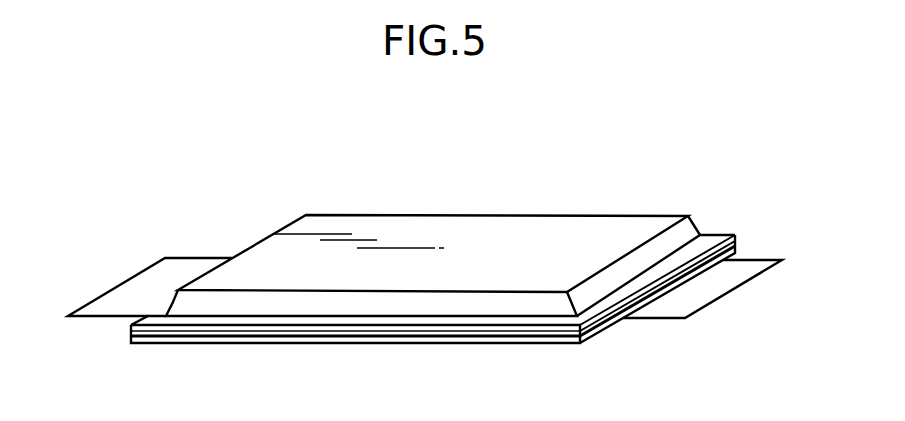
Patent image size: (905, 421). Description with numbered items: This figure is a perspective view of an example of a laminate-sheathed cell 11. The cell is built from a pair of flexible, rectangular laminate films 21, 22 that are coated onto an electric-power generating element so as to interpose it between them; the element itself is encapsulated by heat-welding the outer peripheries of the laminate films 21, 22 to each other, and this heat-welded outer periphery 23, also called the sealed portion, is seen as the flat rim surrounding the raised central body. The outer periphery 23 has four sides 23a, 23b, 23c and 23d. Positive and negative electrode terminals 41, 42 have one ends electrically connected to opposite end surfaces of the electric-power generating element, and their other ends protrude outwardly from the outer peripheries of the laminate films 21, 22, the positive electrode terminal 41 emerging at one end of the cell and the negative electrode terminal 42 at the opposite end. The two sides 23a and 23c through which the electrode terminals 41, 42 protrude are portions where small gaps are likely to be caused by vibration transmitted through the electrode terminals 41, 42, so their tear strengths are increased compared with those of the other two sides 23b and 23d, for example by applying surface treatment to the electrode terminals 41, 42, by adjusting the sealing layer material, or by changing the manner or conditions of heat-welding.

The laminate-sheathed cell 11 is at (219, 163).
The laminate film 21 is at (713, 233).
The laminate film 22 is at (737, 255).
The outer periphery 23 is at (467, 318).
The side 23a is at (645, 282).
The side 23b is at (307, 327).
The side 23c is at (157, 318).
The side 23d is at (705, 237).
The positive electrode terminal 41 is at (760, 267).
The negative electrode terminal 42 is at (123, 293).